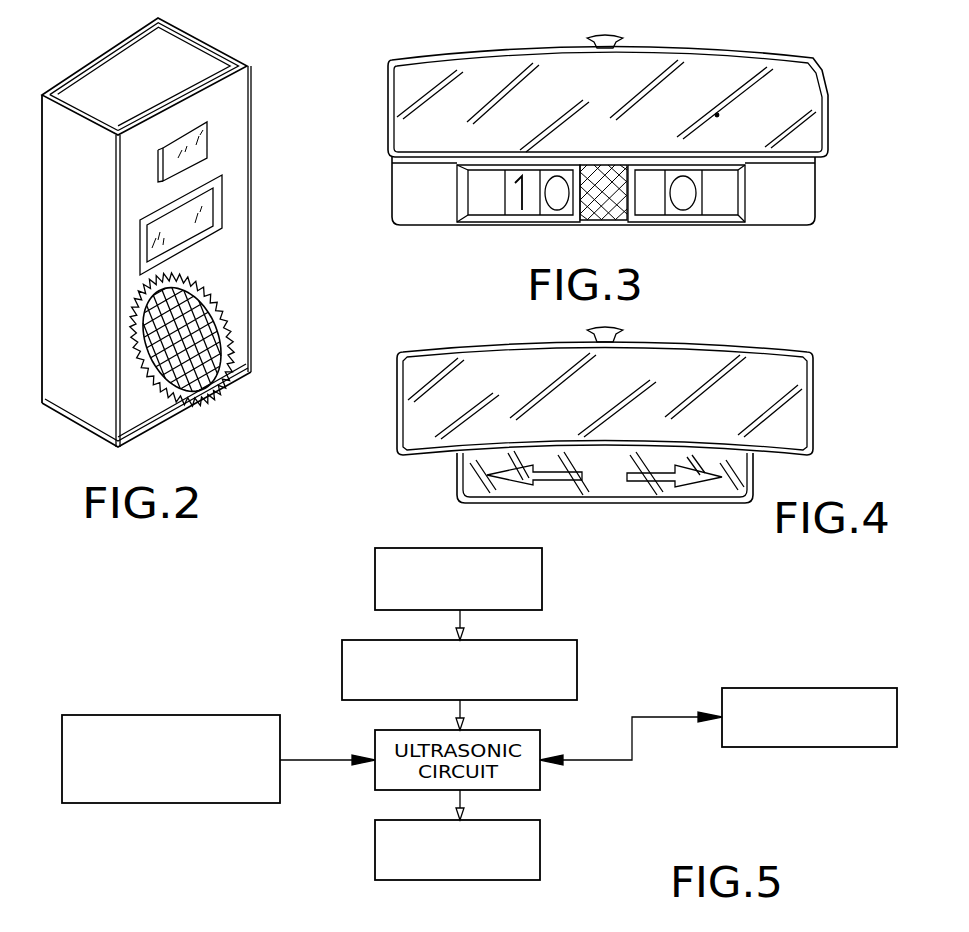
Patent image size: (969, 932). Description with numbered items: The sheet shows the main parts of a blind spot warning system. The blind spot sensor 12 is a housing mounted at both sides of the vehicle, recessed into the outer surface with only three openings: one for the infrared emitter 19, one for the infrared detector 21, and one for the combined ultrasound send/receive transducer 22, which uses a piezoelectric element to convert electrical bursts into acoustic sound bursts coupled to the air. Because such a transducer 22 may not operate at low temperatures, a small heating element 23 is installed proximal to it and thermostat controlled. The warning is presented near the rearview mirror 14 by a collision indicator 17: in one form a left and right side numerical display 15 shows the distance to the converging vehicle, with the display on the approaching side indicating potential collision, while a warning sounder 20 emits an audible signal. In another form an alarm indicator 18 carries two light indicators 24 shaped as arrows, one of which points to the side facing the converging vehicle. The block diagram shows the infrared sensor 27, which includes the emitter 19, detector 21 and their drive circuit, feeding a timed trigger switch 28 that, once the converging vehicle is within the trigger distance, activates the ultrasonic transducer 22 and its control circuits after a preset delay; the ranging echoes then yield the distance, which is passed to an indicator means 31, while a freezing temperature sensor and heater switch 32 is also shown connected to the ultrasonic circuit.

In FIG. 2, the blind spot sensor 12 is at (253, 128).
In FIG. 3, the rearview mirror 14 is at (722, 72).
In FIG. 4, the rearview mirror 14 is at (750, 360).
In FIG. 3, the numerical display 15 is at (514, 205).
In FIG. 3, the collision indicator 17 is at (686, 258).
In FIG. 4, the alarm indicator 18 is at (607, 535).
In FIG. 2, the infrared emitter 19 is at (168, 165).
In FIG. 3, the warning sounder 20 is at (600, 212).
In FIG. 2, the infrared detector 21 is at (205, 212).
In FIG. 2, the ultrasonic transducer 22 is at (165, 330).
In FIG. 5, the ultrasonic transducer 22 is at (797, 688).
In FIG. 2, the heating element 23 is at (222, 283).
In FIG. 4, the light indicators 24 is at (523, 482).
In FIG. 5, the infrared sensor 27 is at (375, 576).
In FIG. 5, the timed trigger switch 28 is at (342, 676).
In FIG. 5, the indicator means 31 is at (470, 882).
In FIG. 5, the freezing temperature sensor and heater switch 32 is at (168, 715).